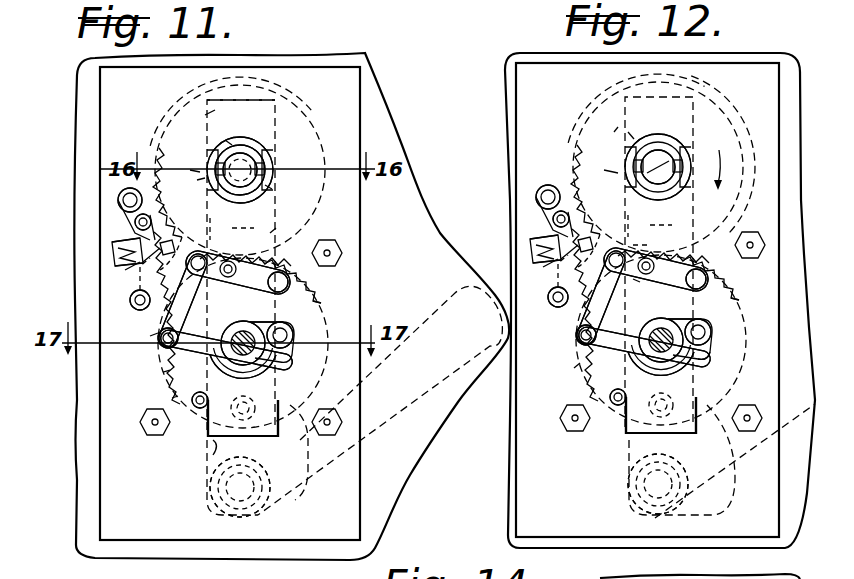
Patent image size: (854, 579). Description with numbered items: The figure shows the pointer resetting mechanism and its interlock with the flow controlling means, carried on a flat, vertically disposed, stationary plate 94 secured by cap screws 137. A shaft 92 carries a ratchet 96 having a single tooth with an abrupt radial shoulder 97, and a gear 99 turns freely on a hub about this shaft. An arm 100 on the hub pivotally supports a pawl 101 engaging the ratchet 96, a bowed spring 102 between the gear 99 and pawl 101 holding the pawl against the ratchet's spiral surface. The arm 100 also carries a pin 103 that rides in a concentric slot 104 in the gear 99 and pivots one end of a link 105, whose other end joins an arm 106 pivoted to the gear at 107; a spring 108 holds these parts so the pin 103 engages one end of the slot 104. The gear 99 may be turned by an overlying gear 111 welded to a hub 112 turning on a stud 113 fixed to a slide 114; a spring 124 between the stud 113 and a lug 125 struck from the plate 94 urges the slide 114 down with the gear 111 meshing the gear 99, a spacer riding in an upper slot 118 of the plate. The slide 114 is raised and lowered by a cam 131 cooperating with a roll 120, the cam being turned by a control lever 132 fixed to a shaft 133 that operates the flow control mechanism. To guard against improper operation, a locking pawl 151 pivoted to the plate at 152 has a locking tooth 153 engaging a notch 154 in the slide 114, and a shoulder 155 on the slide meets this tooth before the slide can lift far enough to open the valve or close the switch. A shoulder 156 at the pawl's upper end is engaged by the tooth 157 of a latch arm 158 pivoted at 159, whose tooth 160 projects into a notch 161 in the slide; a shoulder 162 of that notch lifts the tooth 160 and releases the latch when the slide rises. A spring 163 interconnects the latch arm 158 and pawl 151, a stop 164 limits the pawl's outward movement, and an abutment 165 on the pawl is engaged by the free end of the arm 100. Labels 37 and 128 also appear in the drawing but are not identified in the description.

In FIG. 11, the housing cover 37 is at (418, 208).
In FIG. 12, the housing cover 37 is at (785, 56).
In FIG. 11, the plate 94 is at (230, 303).
In FIG. 12, the plate 94 is at (647, 300).
In FIG. 11, the shaft 92 is at (250, 353).
In FIG. 12, the shaft 92 is at (661, 330).
In FIG. 11, the ratchet 96 is at (206, 402).
In FIG. 12, the ratchet 96 is at (614, 384).
In FIG. 11, the radial shoulder 97 is at (266, 318).
In FIG. 12, the radial shoulder 97 is at (684, 306).
In FIG. 11, the gear 99 is at (318, 295).
In FIG. 12, the gear 99 is at (744, 283).
In FIG. 11, the arm 100 is at (163, 372).
In FIG. 12, the arm 100 is at (721, 343).
In FIG. 11, the pawl 101 is at (282, 333).
In FIG. 12, the pawl 101 is at (711, 322).
In FIG. 11, the bowed spring 102 is at (284, 378).
In FIG. 12, the bowed spring 102 is at (684, 363).
In FIG. 11, the pin 103 is at (163, 345).
In FIG. 12, the pin 103 is at (564, 341).
In FIG. 11, the slot 104 is at (150, 336).
In FIG. 12, the slot 104 is at (562, 370).
In FIG. 11, the link 105 is at (183, 315).
In FIG. 12, the link 105 is at (601, 297).
In FIG. 11, the arm 106 is at (238, 272).
In FIG. 12, the arm 106 is at (656, 269).
In FIG. 11, the pivot 107 is at (294, 277).
In FIG. 12, the pivot 107 is at (707, 266).
In FIG. 11, the spring 108 is at (172, 398).
In FIG. 12, the spring 108 is at (655, 285).
In FIG. 11, the overlying gear 111 is at (285, 100).
In FIG. 12, the overlying gear 111 is at (633, 108).
In FIG. 11, the hub 112 is at (247, 146).
In FIG. 12, the hub 112 is at (676, 162).
In FIG. 11, the stud 113 is at (273, 153).
In FIG. 11, the slide 114 is at (213, 455).
In FIG. 12, the slide 114 is at (723, 154).
In FIG. 11, the upper slot 118 is at (244, 135).
In FIG. 11, the roll 120 is at (208, 436).
In FIG. 12, the roll 120 is at (644, 423).
In FIG. 11, the spring 124 is at (272, 189).
In FIG. 11, the lug 125 is at (276, 228).
In FIG. 11, the shaft 128 is at (274, 169).
In FIG. 12, the shaft 128 is at (658, 144).
In FIG. 11, the cam 131 is at (318, 496).
In FIG. 12, the cam 131 is at (699, 464).
In FIG. 11, the control lever 132 is at (462, 298).
In FIG. 12, the control lever 132 is at (798, 380).
In FIG. 11, the shaft 133 is at (222, 490).
In FIG. 12, the shaft 133 is at (658, 484).
In FIG. 11, the cap screws 137 is at (330, 254).
In FIG. 12, the cap screws 137 is at (663, 318).
In FIG. 11, the locking pawl 151 is at (135, 296).
In FIG. 12, the locking pawl 151 is at (551, 297).
In FIG. 11, the pivot 152 is at (226, 332).
In FIG. 12, the pivot 152 is at (644, 342).
In FIG. 11, the locking tooth 153 is at (212, 232).
In FIG. 12, the locking tooth 153 is at (652, 218).
In FIG. 11, the notch 154 is at (243, 224).
In FIG. 12, the notch 154 is at (661, 223).
In FIG. 12, the shoulder 155 is at (657, 238).
In FIG. 11, the shoulder 156 is at (190, 170).
In FIG. 11, the tooth 157 is at (197, 180).
In FIG. 12, the tooth 157 is at (602, 164).
In FIG. 11, the latch arm 158 is at (135, 221).
In FIG. 12, the latch arm 158 is at (547, 170).
In FIG. 11, the pivot 159 is at (118, 200).
In FIG. 12, the pivot 159 is at (549, 192).
In FIG. 11, the tooth 160 is at (205, 115).
In FIG. 12, the tooth 160 is at (658, 166).
In FIG. 11, the notch 161 is at (228, 140).
In FIG. 12, the notch 161 is at (616, 123).
In FIG. 12, the shoulder 162 is at (603, 137).
In FIG. 11, the spring 163 is at (125, 270).
In FIG. 12, the spring 163 is at (544, 272).
In FIG. 11, the stop 164 is at (113, 262).
In FIG. 12, the stop 164 is at (518, 251).
In FIG. 11, the abutment 165 is at (116, 247).
In FIG. 12, the abutment 165 is at (516, 236).